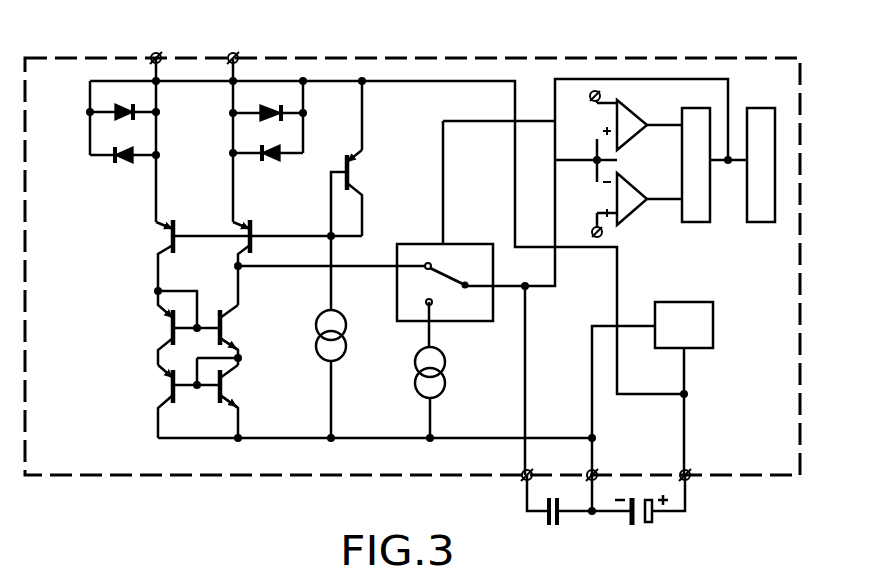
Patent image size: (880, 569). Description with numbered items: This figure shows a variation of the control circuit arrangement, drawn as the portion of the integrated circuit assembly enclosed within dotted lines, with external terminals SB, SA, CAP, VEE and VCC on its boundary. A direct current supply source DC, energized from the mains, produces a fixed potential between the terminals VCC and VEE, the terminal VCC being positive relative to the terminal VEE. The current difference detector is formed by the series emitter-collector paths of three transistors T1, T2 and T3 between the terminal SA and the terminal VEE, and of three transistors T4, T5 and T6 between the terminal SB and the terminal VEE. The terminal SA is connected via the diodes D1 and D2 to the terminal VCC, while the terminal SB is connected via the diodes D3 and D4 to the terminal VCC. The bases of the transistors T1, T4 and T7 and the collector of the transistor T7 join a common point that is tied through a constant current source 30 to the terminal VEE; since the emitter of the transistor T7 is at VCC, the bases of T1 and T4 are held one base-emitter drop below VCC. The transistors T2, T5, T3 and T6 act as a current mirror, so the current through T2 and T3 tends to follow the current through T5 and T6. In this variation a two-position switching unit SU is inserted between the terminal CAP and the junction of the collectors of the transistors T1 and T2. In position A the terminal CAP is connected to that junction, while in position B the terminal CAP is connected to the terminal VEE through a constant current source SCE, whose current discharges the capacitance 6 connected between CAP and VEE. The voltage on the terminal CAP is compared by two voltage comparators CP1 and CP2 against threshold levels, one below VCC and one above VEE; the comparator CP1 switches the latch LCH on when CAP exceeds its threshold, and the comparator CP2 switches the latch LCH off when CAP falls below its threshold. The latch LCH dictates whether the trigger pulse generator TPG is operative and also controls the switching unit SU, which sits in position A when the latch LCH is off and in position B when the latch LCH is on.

The capacitance 6 is at (548, 516).
The constant current source 30 is at (345, 344).
The terminal SB is at (158, 52).
The terminal SA is at (235, 52).
The diode D1 is at (284, 111).
The diode D2 is at (268, 160).
The diode D3 is at (105, 111).
The diode D4 is at (124, 164).
The transistor T1 is at (241, 231).
The transistor T2 is at (230, 328).
The transistor T3 is at (230, 385).
The transistor T4 is at (166, 236).
The transistor T5 is at (166, 328).
The transistor T6 is at (166, 385).
The transistor T7 is at (363, 193).
The switching unit SU is at (445, 267).
The position A is at (437, 279).
The position B is at (438, 311).
The constant current source SCE is at (445, 378).
The voltage comparator CP1 is at (637, 125).
The voltage comparator CP2 is at (632, 190).
The latch LCH is at (700, 222).
The trigger pulse generator TPG is at (763, 222).
The direct current supply source DC is at (684, 325).
The terminal CAP is at (522, 470).
The terminal VEE is at (598, 470).
The terminal VCC is at (691, 470).